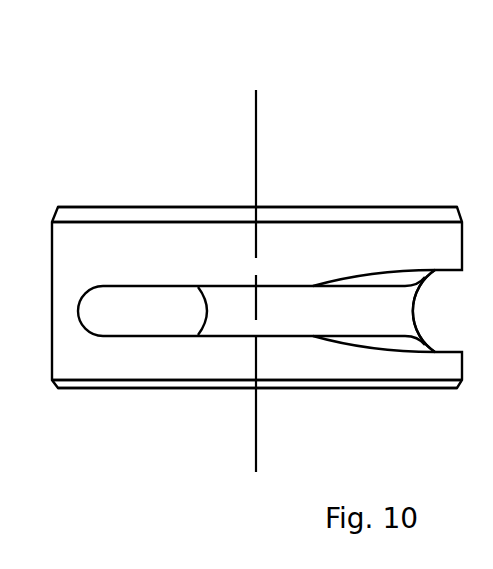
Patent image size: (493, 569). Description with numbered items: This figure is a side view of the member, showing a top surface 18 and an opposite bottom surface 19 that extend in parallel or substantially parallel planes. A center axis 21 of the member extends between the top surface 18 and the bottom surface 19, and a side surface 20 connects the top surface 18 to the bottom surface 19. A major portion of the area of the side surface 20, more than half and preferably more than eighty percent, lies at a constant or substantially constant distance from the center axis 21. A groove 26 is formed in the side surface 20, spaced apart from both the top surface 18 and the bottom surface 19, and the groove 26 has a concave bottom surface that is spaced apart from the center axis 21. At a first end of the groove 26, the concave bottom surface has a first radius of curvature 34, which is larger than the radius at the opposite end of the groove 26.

The top surface 18 is at (192, 388).
The bottom surface 19 is at (210, 207).
The side surface 20 is at (183, 245).
The center axis 21 is at (252, 112).
The groove 26 is at (350, 310).
The first radius of curvature 34 is at (428, 270).